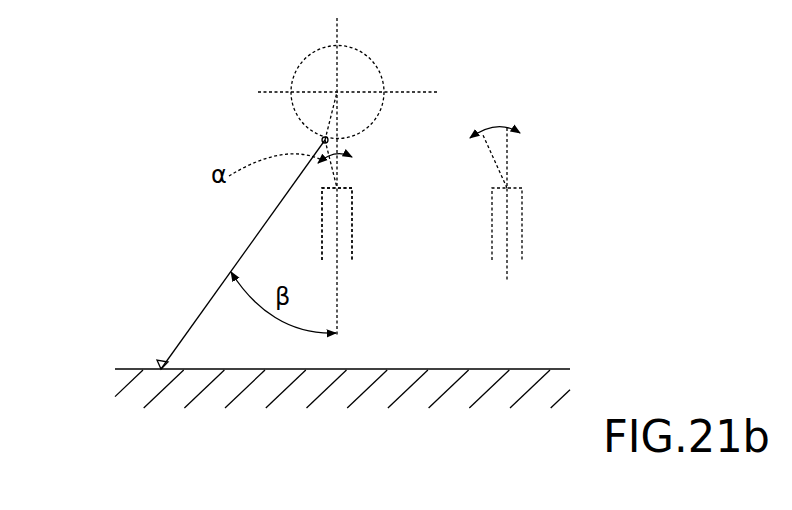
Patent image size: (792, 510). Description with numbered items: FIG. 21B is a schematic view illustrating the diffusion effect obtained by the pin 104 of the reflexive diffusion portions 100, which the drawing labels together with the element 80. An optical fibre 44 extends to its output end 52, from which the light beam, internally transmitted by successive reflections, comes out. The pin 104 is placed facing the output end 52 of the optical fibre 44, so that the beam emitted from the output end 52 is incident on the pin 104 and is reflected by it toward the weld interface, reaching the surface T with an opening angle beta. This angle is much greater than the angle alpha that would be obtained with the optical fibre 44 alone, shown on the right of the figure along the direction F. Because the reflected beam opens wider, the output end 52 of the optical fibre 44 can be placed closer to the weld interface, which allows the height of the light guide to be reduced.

The hair cutting device / handle 80 is at (444, 84).
The reflexive diffusion portion 100 is at (444, 84).
The pin 104 is at (380, 68).
The output end 52 is at (352, 188).
The optical fibre 44 is at (352, 230).
The force direction / axis F is at (510, 153).
The skin surface / treatment surface T is at (120, 368).